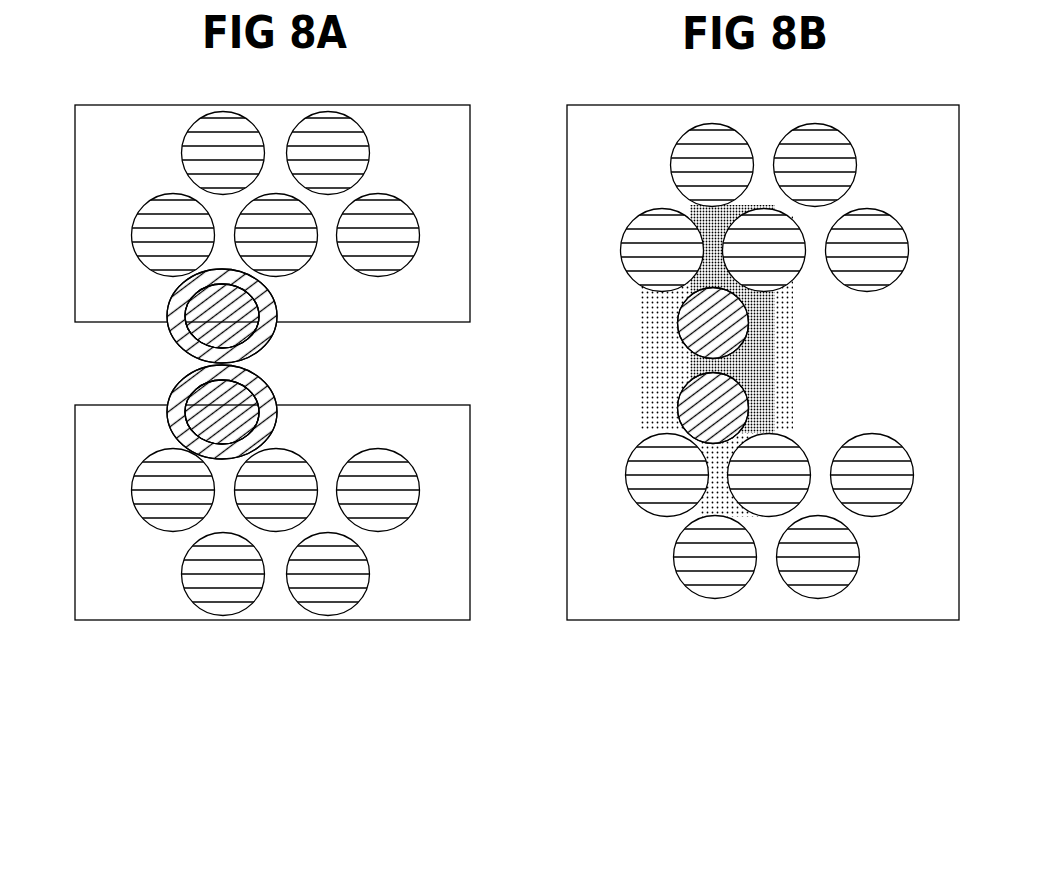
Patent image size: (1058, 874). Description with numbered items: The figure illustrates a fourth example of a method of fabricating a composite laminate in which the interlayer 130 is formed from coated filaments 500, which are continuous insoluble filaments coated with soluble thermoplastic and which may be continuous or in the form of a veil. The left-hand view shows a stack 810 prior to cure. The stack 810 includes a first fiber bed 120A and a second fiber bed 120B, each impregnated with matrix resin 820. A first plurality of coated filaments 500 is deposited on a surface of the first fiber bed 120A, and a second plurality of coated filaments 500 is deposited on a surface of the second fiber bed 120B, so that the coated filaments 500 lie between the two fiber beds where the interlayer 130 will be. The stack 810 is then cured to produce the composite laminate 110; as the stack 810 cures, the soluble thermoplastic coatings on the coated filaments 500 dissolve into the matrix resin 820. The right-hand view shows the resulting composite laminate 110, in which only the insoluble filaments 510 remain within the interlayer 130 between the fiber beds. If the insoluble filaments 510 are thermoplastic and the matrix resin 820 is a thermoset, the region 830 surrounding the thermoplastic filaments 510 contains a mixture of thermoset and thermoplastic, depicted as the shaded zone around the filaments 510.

In FIG. 8B, the composite laminate 110 is at (746, 684).
In FIG. 8A, the first fiber bed 120A is at (133, 622).
In FIG. 8A, the second fiber bed 120B is at (132, 105).
In FIG. 8B, the interlayer 130 is at (549, 352).
In FIG. 8A, the coated filaments 500 is at (273, 330).
In FIG. 8B, the insoluble filaments 510 is at (750, 327).
In FIG. 8A, the stack 810 is at (236, 685).
In FIG. 8A, the matrix resin 820 is at (133, 156).
In FIG. 8B, the region 830 is at (753, 357).